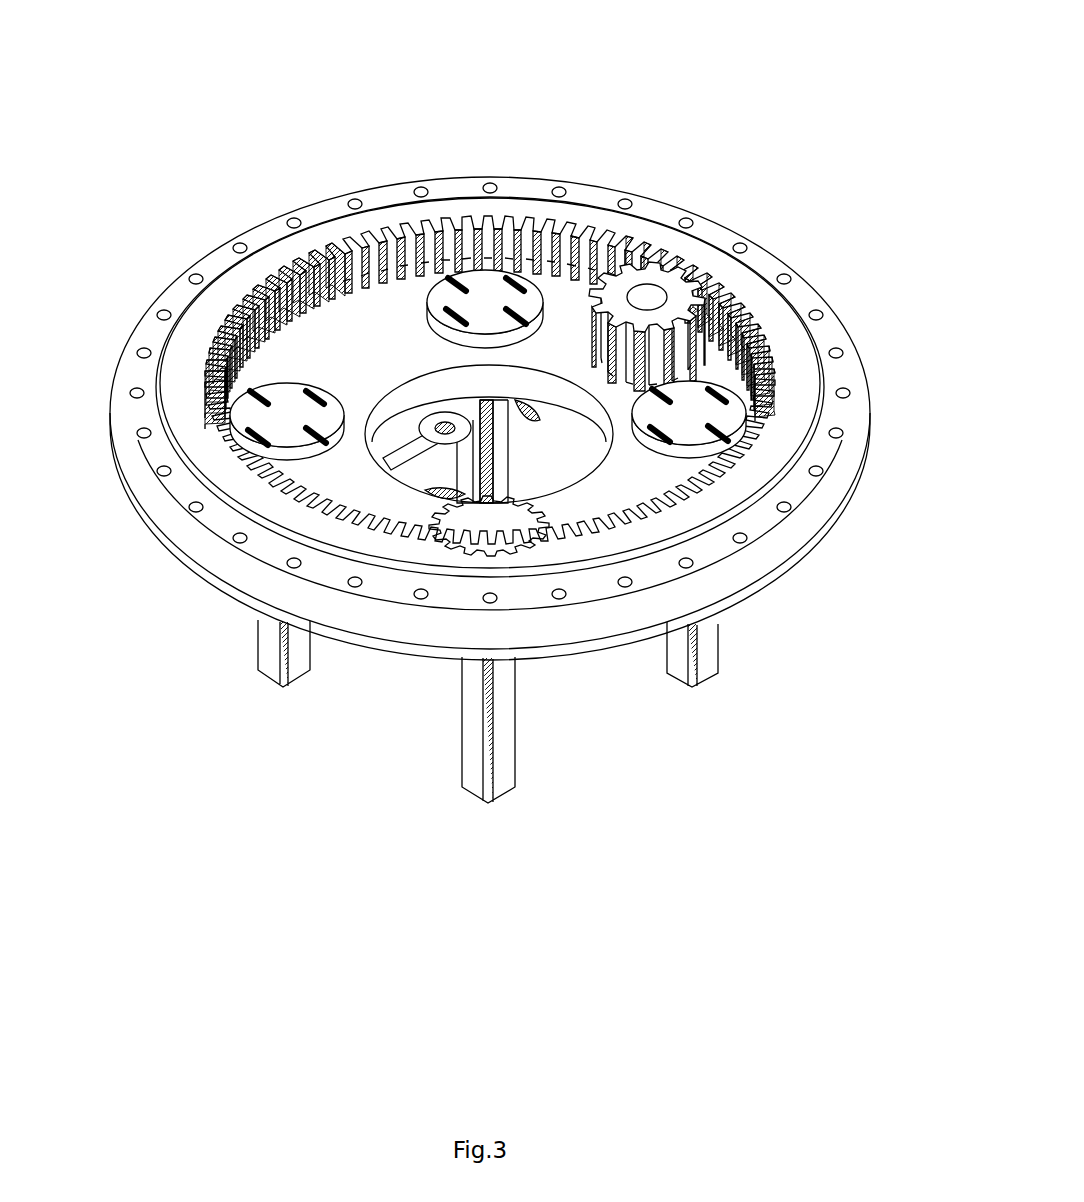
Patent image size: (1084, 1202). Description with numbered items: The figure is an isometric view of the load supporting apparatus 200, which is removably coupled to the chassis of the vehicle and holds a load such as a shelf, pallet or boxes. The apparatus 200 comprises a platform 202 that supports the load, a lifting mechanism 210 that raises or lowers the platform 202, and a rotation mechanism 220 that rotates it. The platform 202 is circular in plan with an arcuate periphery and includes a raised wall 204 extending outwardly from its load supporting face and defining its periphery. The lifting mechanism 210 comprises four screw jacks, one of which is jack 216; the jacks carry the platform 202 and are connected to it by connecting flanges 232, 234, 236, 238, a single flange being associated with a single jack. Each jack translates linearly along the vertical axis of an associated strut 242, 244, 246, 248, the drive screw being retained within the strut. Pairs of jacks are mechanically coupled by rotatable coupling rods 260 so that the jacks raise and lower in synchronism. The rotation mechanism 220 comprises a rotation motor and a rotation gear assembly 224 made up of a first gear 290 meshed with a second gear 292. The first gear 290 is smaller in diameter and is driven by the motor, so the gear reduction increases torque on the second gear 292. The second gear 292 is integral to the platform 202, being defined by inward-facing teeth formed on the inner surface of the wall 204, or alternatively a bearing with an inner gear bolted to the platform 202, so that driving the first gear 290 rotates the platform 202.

The load supporting apparatus 200 is at (503, 505).
The platform 202 is at (521, 401).
The raised wall 204 is at (455, 413).
The lifting mechanism 210 is at (522, 815).
The jack 216 is at (523, 446).
The rotation mechanism 220 is at (676, 243).
The rotation gear assembly 224 is at (778, 347).
The connecting flange 232 is at (482, 528).
The connecting flange 234 is at (281, 425).
The connecting flange 236 is at (484, 292).
The connecting flange 238 is at (690, 413).
The strut 242 is at (504, 790).
The strut 244 is at (288, 665).
The strut 246 is at (494, 470).
The strut 248 is at (703, 662).
The coupling rod 260 is at (402, 445).
The first gear 290 is at (675, 290).
The second gear 292 is at (727, 478).